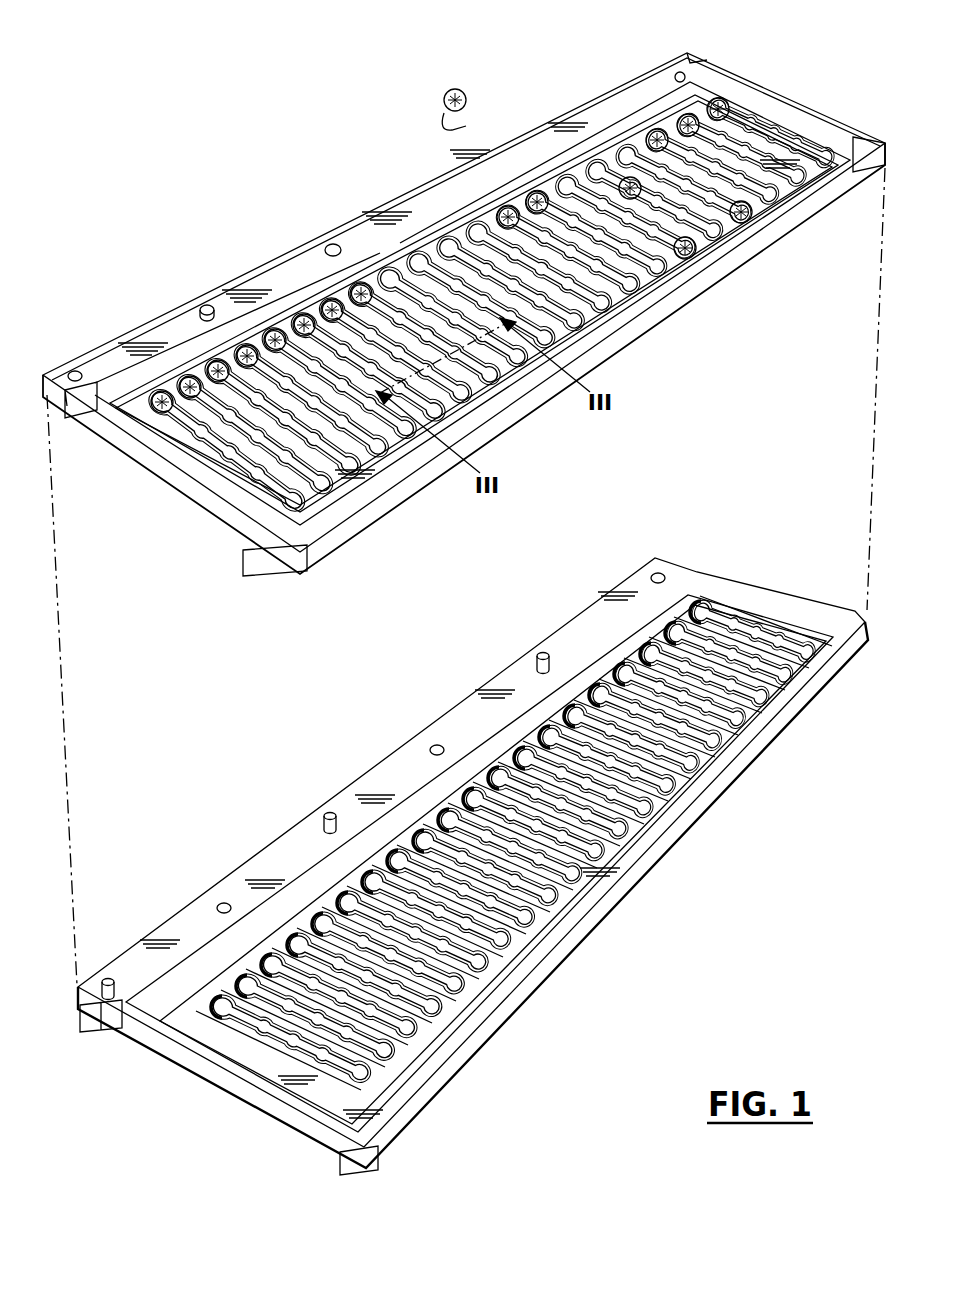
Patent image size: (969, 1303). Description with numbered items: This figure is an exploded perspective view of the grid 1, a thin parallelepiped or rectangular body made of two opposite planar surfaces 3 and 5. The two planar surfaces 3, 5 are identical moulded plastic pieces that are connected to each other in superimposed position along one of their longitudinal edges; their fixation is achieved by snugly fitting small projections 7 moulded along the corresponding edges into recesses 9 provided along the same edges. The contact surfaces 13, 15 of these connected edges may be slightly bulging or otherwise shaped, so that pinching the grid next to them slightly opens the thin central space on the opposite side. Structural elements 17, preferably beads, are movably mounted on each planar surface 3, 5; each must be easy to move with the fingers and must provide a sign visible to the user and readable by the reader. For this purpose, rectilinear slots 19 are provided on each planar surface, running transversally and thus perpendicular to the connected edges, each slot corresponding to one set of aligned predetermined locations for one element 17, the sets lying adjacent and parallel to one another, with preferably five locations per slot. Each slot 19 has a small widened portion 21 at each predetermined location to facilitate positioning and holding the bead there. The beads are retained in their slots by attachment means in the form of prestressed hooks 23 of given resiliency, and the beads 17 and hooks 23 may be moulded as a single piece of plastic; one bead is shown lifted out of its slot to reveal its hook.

The grid 1 is at (760, 70).
The planar surface 3 is at (651, 95).
The planar surface 5 is at (700, 815).
The projection 7 is at (207, 303).
The recess 9 is at (333, 243).
The contact surface 13 is at (143, 343).
The contact surface 15 is at (280, 848).
The structural element 17 is at (463, 92).
The rectilinear slot 19 is at (412, 425).
The widened portion 21 is at (278, 483).
The prestressed hook 23 is at (448, 130).